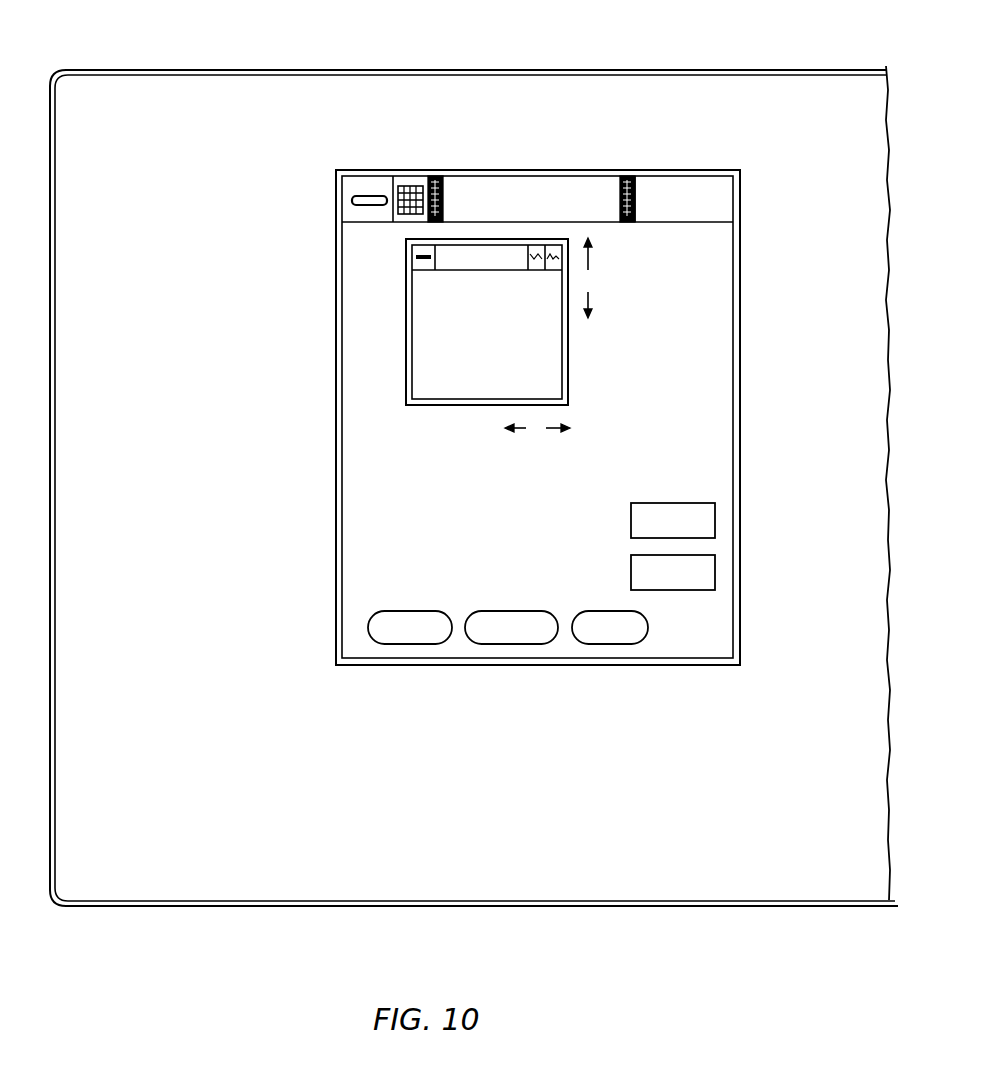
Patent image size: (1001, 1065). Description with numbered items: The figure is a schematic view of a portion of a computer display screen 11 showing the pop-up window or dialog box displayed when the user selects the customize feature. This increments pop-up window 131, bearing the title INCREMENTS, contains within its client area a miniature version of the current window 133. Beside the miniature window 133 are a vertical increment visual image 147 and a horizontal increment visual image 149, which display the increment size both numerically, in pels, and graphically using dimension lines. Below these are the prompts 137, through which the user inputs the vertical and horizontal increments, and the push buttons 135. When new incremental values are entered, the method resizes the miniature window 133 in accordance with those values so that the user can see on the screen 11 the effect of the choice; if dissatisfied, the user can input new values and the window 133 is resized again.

The computer display screen 11 is at (361, 70).
The increments pop-up window 131 is at (335, 198).
The miniature window 133 is at (405, 284).
The vertical increment visual image 147 is at (593, 304).
The horizontal increment visual image 149 is at (553, 425).
The prompts 137 is at (715, 523).
The push buttons 135 is at (417, 644).